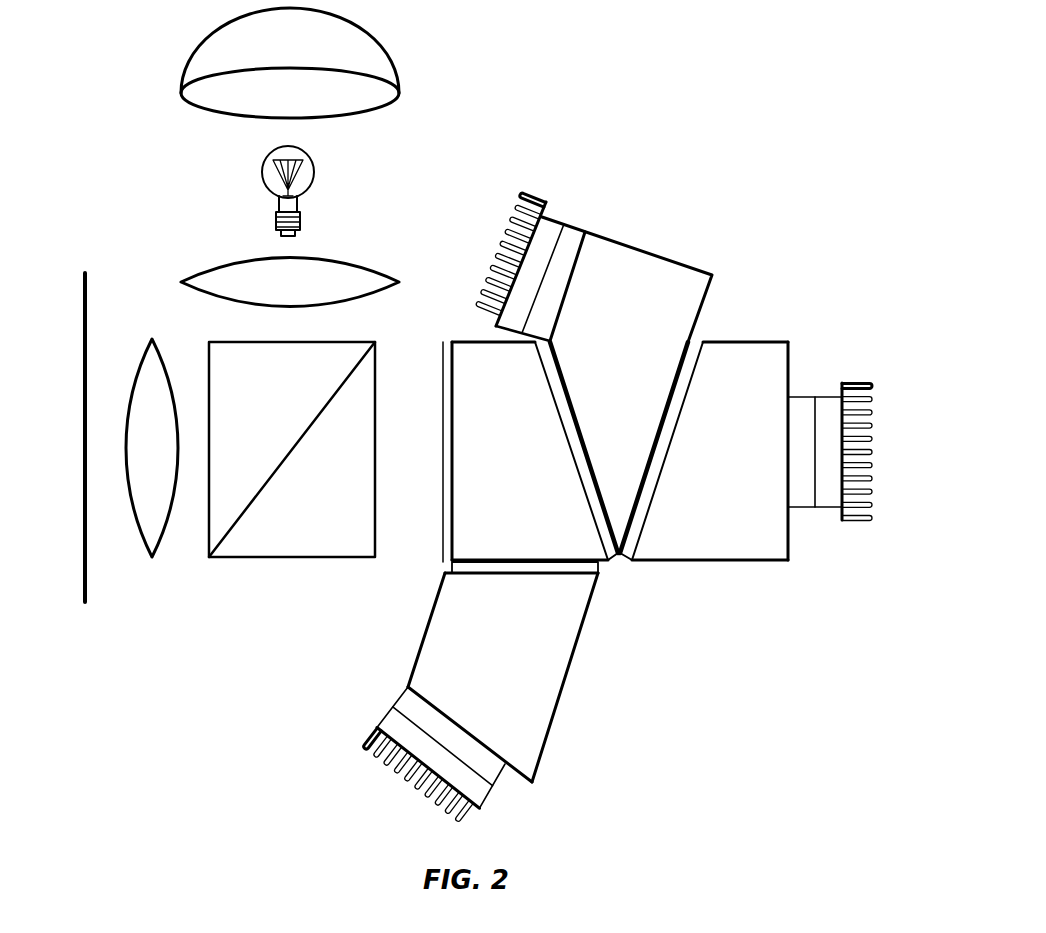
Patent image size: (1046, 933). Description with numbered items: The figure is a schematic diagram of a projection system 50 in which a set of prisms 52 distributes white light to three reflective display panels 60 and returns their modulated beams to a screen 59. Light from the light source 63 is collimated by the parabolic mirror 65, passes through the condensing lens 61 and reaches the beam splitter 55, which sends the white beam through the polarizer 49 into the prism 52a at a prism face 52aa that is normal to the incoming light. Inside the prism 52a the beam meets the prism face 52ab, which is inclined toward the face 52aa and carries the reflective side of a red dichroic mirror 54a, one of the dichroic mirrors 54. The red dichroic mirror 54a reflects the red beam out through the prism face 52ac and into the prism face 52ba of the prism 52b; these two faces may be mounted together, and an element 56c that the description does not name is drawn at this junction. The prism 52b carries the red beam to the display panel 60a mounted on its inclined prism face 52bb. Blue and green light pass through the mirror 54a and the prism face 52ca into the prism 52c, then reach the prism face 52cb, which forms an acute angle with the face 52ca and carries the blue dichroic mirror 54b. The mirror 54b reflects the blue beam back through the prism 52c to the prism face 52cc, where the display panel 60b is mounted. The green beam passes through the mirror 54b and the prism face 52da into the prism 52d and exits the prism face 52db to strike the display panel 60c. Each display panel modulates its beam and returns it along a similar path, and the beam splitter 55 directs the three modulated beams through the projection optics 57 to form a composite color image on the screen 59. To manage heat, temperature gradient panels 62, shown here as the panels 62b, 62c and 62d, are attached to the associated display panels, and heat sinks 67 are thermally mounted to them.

The projection system 50 is at (638, 135).
The parabolic mirror 65 is at (203, 48).
The light source 63 is at (262, 175).
The condensing lens 61 is at (182, 283).
The display screen 59 is at (85, 410).
The projection optics 57 is at (150, 340).
The beam splitter 55 is at (285, 557).
The polarizer 49 is at (442, 452).
The coupling layer 56c is at (452, 567).
The prisms 52 is at (517, 339).
The prism 52a is at (509, 420).
The prism face 52aa is at (452, 475).
The prism face 52ab is at (583, 490).
The prism face 52ac is at (458, 560).
The prism 52b is at (523, 677).
The prism face 52ba is at (527, 577).
The prism face 52bb is at (457, 722).
The prism 52c is at (627, 379).
The prism face 52ca is at (572, 398).
The prism face 52cb is at (683, 357).
The prism face 52cc is at (570, 288).
The prism 52d is at (747, 454).
The prism face 52da is at (672, 443).
The prism face 52db is at (788, 473).
The dichroic mirror 54 is at (618, 447).
The red dichroic mirror 54a is at (550, 344).
The blue dichroic mirror 54b is at (696, 353).
The display panels 60 is at (625, 515).
The display panel 60a is at (388, 758).
The display panel 60b is at (548, 290).
The display panel 60c is at (807, 468).
The temperature gradient panels 62 is at (642, 503).
The temperature gradient panel 62b is at (516, 203).
The temperature gradient panel 62c is at (835, 488).
The substrate 62d is at (447, 807).
The heat sink 67 is at (533, 193).